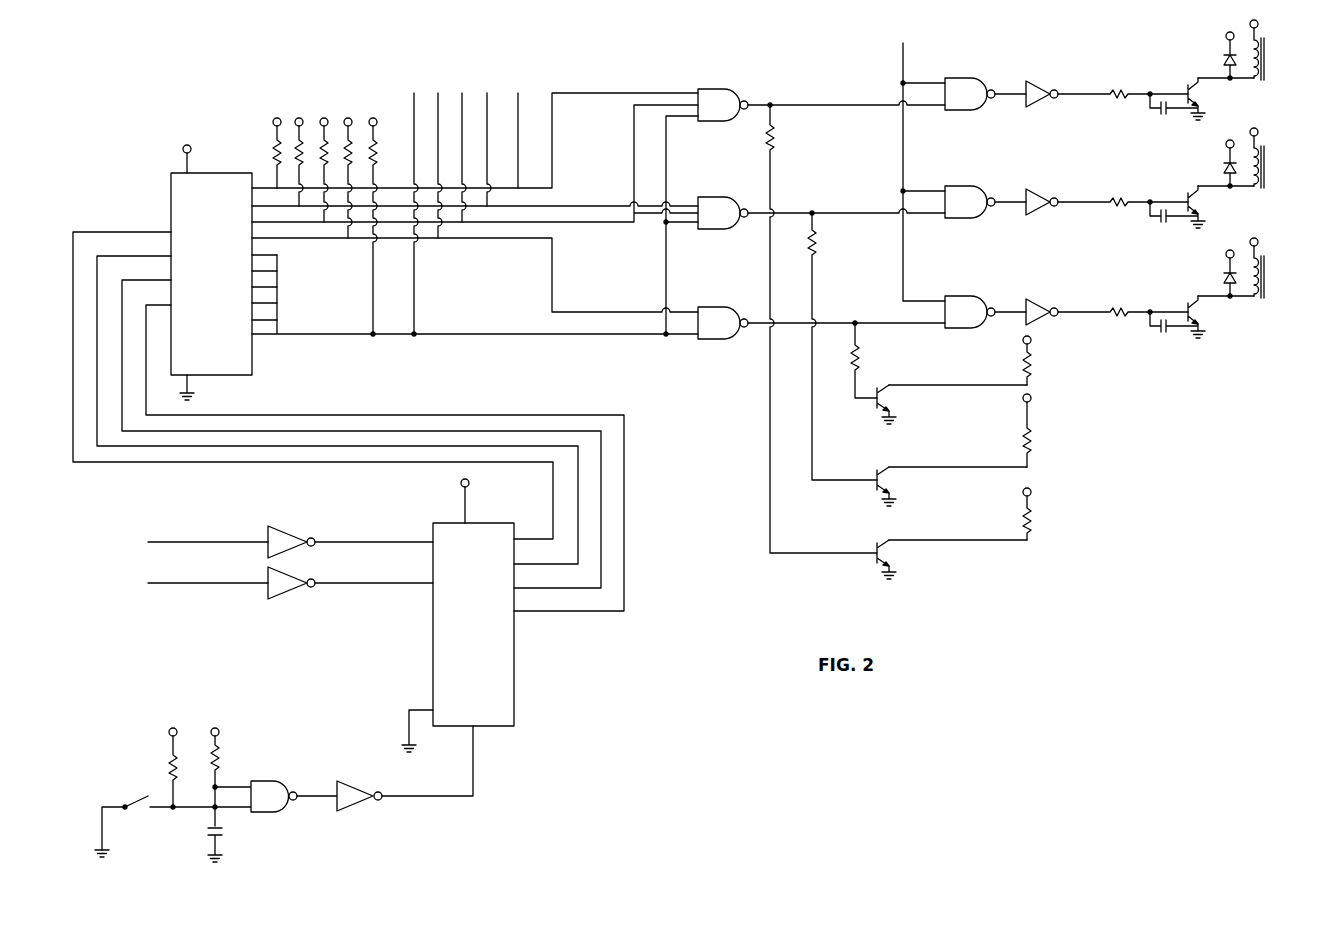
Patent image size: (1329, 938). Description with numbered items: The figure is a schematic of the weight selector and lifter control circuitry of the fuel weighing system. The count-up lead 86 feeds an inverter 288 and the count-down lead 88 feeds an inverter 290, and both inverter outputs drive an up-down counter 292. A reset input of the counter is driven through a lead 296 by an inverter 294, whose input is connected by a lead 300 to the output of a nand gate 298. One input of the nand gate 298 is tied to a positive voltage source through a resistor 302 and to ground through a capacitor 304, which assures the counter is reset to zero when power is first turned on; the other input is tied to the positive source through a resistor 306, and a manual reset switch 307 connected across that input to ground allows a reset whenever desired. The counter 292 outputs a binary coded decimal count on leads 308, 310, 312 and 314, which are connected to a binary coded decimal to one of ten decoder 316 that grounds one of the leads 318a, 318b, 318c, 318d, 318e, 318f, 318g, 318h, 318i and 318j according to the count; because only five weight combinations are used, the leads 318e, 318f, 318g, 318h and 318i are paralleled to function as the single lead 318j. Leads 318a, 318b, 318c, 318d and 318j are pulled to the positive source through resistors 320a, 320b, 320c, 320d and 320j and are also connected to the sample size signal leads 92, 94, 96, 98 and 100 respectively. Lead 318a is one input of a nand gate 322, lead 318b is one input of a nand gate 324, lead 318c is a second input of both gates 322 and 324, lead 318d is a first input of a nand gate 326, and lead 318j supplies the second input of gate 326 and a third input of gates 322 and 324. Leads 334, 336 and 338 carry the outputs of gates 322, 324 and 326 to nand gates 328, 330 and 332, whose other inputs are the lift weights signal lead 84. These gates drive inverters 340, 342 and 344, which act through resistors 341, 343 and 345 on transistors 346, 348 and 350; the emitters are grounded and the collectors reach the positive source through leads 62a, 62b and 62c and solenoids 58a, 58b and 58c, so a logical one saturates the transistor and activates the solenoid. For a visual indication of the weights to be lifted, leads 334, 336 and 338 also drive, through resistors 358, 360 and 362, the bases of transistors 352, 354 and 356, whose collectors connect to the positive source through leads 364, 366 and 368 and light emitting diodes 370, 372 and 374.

The lift weights signal lead 84 is at (905, 72).
The count-up lead 86 is at (198, 542).
The count-down lead 88 is at (198, 583).
The sample size signal lead 92 is at (518, 95).
The sample size signal lead 94 is at (487, 95).
The sample size signal lead 96 is at (462, 95).
The sample size signal lead 98 is at (438, 95).
The sample size signal lead 100 is at (414, 95).
The inverter 288 is at (288, 533).
The inverter 290 is at (318, 569).
The up-down counter 292 is at (514, 671).
The inverter 294 is at (355, 809).
The lead 296 is at (474, 765).
The nand gate 298 is at (282, 808).
The lead 300 is at (306, 794).
The resistor 302 is at (219, 767).
The capacitor 304 is at (212, 832).
The resistor 306 is at (172, 779).
The manual reset switch 307 is at (138, 798).
The lead 308 is at (553, 500).
The lead 310 is at (578, 470).
The lead 312 is at (602, 459).
The lead 314 is at (626, 485).
The binary coded decimal to one of ten decoder 316 is at (236, 376).
The lead 318a is at (258, 186).
The lead 318b is at (568, 204).
The lead 318c is at (604, 224).
The lead 318d is at (512, 240).
The lead 318e is at (267, 256).
The lead 318f is at (267, 272).
The lead 318g is at (267, 288).
The lead 318h is at (267, 304).
The lead 318i is at (267, 321).
The lead 318j is at (266, 336).
The resistor 320a is at (272, 146).
The resistor 320b is at (296, 137).
The resistor 320c is at (322, 136).
The resistor 320d is at (348, 116).
The resistor 320j is at (374, 136).
The nand gate 322 is at (727, 85).
The nand gate 324 is at (727, 193).
The nand gate 326 is at (727, 303).
The nand gate 328 is at (965, 84).
The nand gate 330 is at (967, 192).
The nand gate 332 is at (967, 302).
The lead 334 is at (808, 97).
The lead 336 is at (843, 205).
The lead 338 is at (846, 322).
The inverter 340 is at (1040, 88).
The resistor 341 is at (1117, 98).
The inverter 342 is at (1040, 196).
The resistor 343 is at (1117, 206).
The inverter 344 is at (1043, 306).
The resistor 345 is at (1117, 316).
The transistor 346 is at (1187, 88).
The transistor 348 is at (1187, 196).
The transistor 350 is at (1187, 306).
The transistor 352 is at (877, 550).
The transistor 354 is at (877, 477).
The transistor 356 is at (877, 395).
The resistor 358 is at (776, 136).
The resistor 360 is at (817, 240).
The resistor 362 is at (857, 344).
The lead 364 is at (974, 536).
The lead 366 is at (974, 463).
The lead 368 is at (974, 381).
The light emitting diode 370 is at (1031, 505).
The light emitting diode 372 is at (1031, 411).
The light emitting diode 374 is at (1031, 353).
The solenoid 58a is at (1267, 58).
The solenoid 58b is at (1267, 166).
The solenoid 58c is at (1267, 276).
The lead 62a is at (1218, 80).
The lead 62b is at (1218, 188).
The lead 62c is at (1218, 298).